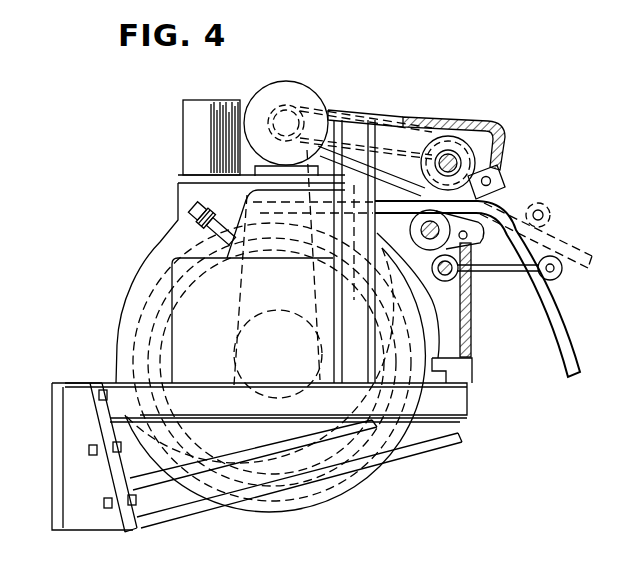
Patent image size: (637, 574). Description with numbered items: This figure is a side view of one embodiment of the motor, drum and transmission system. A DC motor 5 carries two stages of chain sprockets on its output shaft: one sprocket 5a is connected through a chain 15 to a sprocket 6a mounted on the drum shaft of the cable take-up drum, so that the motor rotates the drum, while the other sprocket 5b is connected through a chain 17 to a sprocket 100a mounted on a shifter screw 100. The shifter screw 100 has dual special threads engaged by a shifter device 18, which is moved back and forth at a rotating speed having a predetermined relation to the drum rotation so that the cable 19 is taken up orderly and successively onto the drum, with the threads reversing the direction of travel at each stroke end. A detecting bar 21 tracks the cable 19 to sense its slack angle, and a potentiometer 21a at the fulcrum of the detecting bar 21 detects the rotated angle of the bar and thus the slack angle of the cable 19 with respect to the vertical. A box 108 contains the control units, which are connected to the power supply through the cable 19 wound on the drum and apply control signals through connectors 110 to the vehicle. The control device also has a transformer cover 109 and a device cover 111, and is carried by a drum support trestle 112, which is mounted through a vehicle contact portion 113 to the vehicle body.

The DC motor 5 is at (323, 106).
The chain sprocket 5a is at (292, 125).
The chain sprocket 5b is at (258, 180).
The sprocket 6a is at (236, 352).
The chain 15 is at (243, 302).
The chain 17 is at (352, 116).
The shifter device 18 is at (510, 175).
The cable 19 is at (566, 340).
The detecting bar 21 is at (560, 278).
The potentiometer 21a is at (470, 300).
The shifter screw 100 is at (460, 160).
The sprocket 100a is at (463, 143).
The box 108 is at (172, 272).
The transformer cover 109 is at (193, 135).
The connectors 110 is at (200, 195).
The device cover 111 is at (478, 118).
The drum support trestle 112 is at (457, 402).
The vehicle contact portion 113 is at (55, 398).